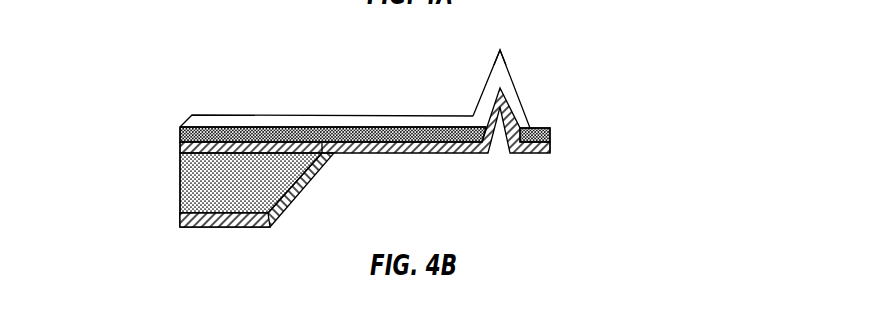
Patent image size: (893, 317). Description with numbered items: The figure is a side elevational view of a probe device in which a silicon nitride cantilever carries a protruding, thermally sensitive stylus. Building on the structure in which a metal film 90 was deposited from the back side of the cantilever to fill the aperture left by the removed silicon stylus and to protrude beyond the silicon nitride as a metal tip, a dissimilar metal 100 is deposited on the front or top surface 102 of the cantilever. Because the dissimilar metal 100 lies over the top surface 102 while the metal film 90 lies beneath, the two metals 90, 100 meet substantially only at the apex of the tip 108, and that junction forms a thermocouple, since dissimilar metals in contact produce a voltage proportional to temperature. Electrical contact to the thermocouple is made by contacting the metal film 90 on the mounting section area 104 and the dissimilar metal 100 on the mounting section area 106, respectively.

The metal film 90 is at (551, 146).
The dissimilar metal 100 is at (517, 108).
The top surface 102 is at (392, 128).
The mounting section area 104 is at (193, 233).
The mounting section area 106 is at (166, 119).
The tip 108 is at (505, 63).